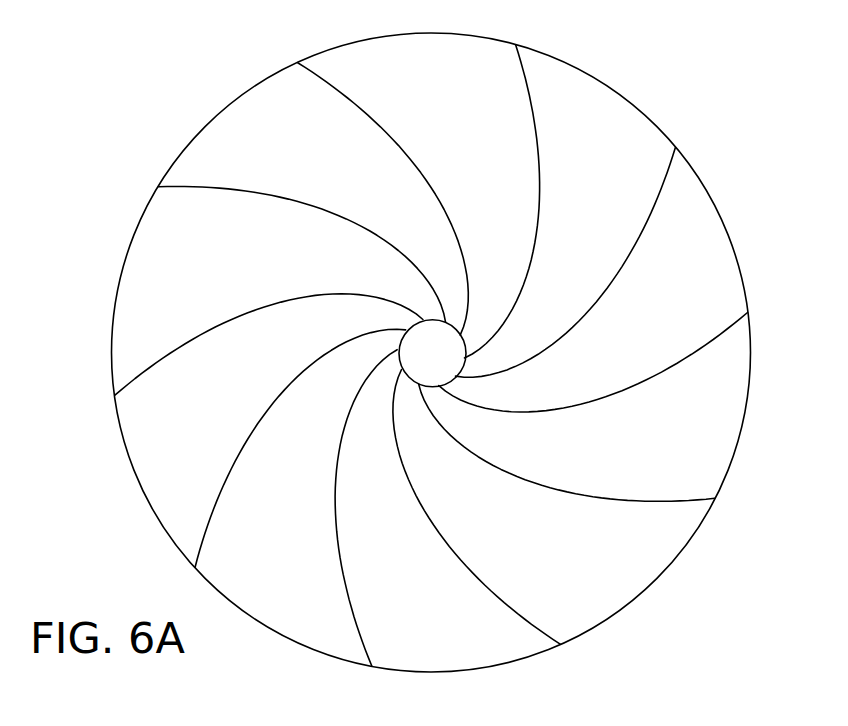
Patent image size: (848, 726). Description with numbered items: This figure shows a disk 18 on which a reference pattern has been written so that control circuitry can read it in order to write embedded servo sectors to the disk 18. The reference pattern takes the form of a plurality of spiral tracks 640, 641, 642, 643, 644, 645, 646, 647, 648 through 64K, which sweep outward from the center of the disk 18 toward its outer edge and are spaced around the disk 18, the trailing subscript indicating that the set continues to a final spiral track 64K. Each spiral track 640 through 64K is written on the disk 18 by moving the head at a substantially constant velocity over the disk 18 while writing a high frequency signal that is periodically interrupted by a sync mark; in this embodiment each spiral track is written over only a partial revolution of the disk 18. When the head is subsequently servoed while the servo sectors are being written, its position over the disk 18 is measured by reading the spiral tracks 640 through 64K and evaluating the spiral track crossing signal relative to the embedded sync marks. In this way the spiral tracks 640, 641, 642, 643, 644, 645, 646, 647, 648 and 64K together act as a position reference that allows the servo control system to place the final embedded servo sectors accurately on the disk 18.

The disk 18 is at (643, 91).
The spiral track 640 is at (530, 97).
The spiral track 641 is at (664, 184).
The spiral track 642 is at (718, 337).
The spiral track 643 is at (661, 502).
The spiral track 644 is at (527, 621).
The spiral track 645 is at (354, 616).
The spiral track 646 is at (206, 528).
The spiral track 647 is at (146, 370).
The spiral track 648 is at (199, 187).
The spiral track 64K is at (340, 92).